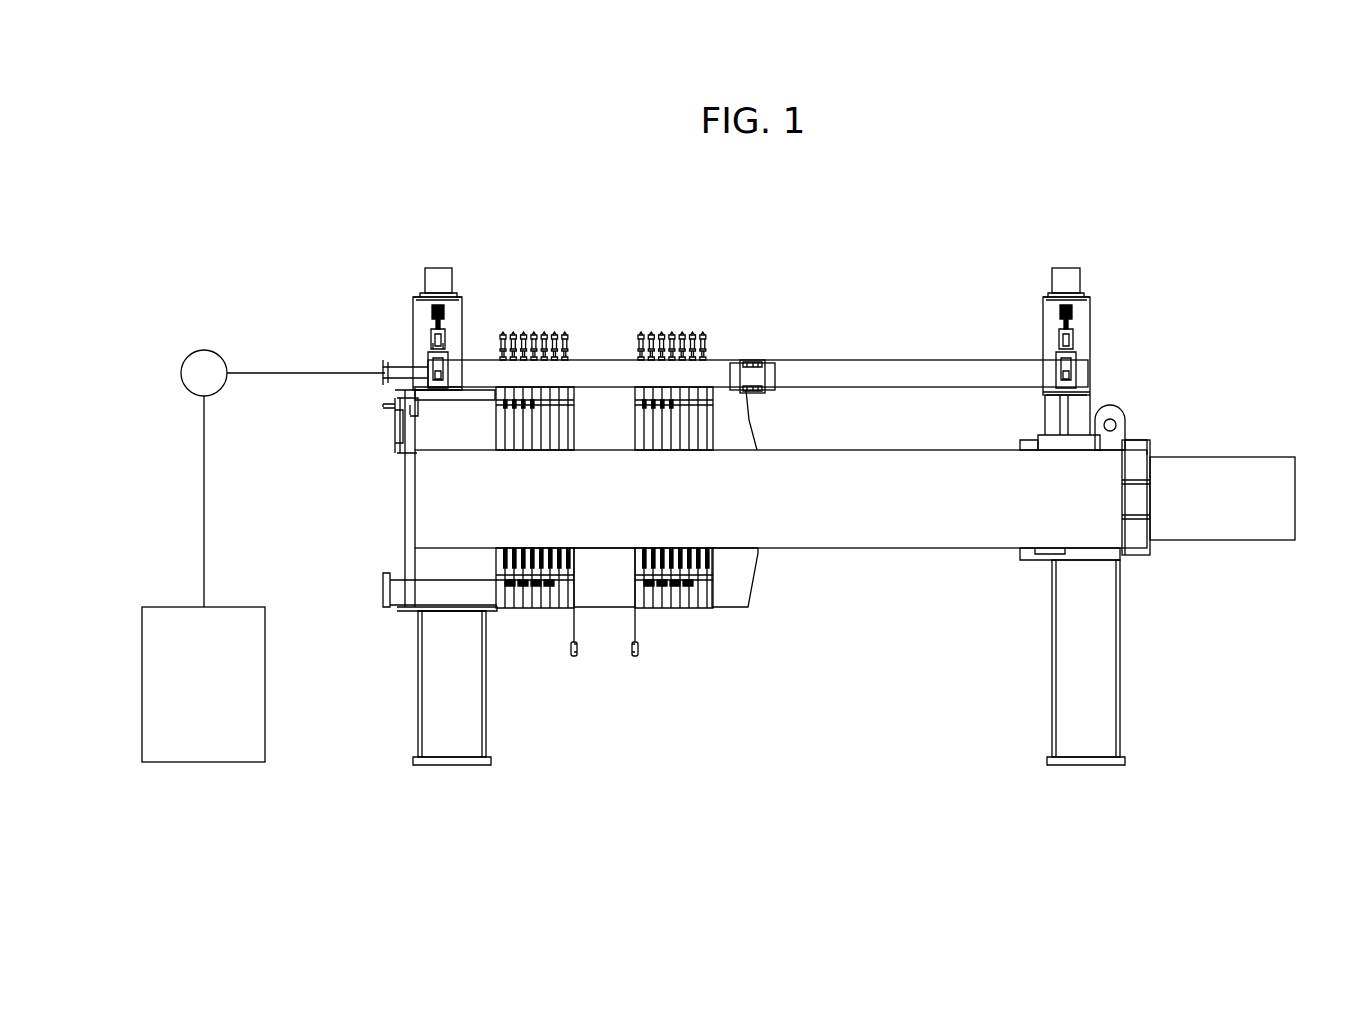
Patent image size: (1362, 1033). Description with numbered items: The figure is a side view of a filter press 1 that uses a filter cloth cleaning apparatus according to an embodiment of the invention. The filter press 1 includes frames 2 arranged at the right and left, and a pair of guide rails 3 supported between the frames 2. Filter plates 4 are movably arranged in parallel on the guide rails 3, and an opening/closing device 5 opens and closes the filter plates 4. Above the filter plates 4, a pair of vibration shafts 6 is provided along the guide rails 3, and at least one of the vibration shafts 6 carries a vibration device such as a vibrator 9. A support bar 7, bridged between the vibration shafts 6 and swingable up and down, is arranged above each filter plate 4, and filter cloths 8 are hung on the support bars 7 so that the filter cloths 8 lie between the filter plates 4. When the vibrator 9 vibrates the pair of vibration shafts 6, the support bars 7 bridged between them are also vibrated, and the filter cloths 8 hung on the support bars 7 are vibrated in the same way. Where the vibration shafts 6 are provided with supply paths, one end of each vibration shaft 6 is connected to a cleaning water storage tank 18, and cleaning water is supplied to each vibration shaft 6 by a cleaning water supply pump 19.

The filter press 1 is at (745, 248).
The frames 2 is at (418, 704).
The guide rails 3 is at (873, 548).
The filter plates 4 is at (652, 604).
The opening/closing device 5 is at (1228, 456).
The vibration shafts 6 is at (970, 367).
The support bar 7 is at (500, 338).
The filter cloths 8 is at (635, 625).
The vibrator 9 is at (752, 376).
The cleaning water storage tank 18 is at (237, 607).
The cleaning water supply pump 19 is at (205, 350).